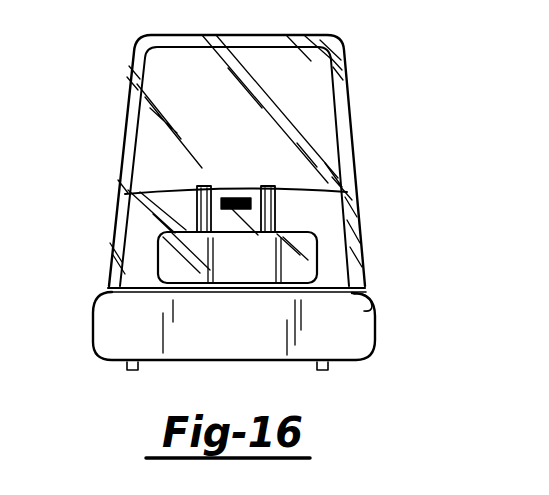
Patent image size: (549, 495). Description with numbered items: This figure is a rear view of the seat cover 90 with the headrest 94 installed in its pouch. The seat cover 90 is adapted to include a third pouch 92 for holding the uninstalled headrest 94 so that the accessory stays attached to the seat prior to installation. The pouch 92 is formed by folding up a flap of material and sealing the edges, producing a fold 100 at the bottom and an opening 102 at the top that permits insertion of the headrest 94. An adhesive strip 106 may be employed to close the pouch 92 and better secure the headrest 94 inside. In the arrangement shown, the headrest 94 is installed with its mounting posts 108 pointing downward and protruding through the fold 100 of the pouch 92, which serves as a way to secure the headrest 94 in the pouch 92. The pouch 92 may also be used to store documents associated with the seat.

The seat cover 90 is at (163, 24).
The headrest pouch 92 is at (125, 243).
The opening 102 is at (325, 183).
The adhesive strip 106 is at (265, 217).
The mounting posts 108 is at (199, 187).
The headrest 94 is at (253, 263).
The fold 100 is at (366, 306).